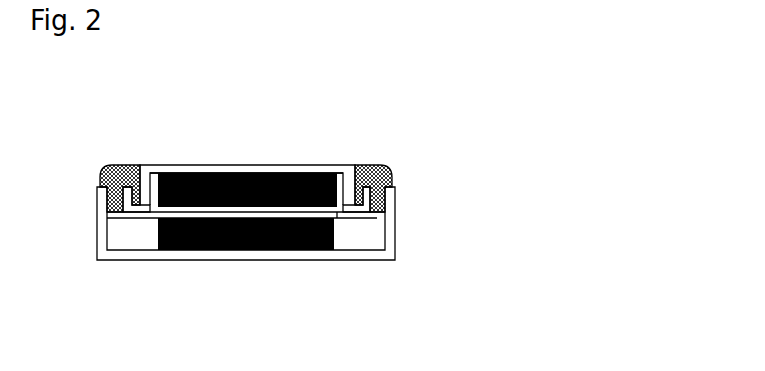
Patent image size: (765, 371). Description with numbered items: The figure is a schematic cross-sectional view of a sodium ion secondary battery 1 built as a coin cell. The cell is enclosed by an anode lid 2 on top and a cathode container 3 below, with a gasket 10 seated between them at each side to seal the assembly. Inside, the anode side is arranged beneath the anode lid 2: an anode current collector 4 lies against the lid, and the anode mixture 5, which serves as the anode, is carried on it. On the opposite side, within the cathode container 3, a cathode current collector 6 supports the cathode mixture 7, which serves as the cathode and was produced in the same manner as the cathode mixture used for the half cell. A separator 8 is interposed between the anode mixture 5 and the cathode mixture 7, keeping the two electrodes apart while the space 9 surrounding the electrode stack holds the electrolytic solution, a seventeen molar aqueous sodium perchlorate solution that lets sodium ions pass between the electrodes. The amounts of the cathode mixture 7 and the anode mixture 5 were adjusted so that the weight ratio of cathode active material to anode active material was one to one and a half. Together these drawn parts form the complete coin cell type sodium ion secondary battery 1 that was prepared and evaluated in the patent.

The sodium ion secondary battery 1 is at (389, 103).
The anode lid 2 is at (327, 164).
The cathode container 3 is at (368, 252).
The anode current collector 4 is at (190, 178).
The anode mixture 5 is at (248, 175).
The cathode current collector 6 is at (195, 248).
The cathode mixture 7 is at (242, 247).
The separator 8 is at (298, 218).
The space 9 is at (153, 195).
The gasket 10 is at (106, 168).